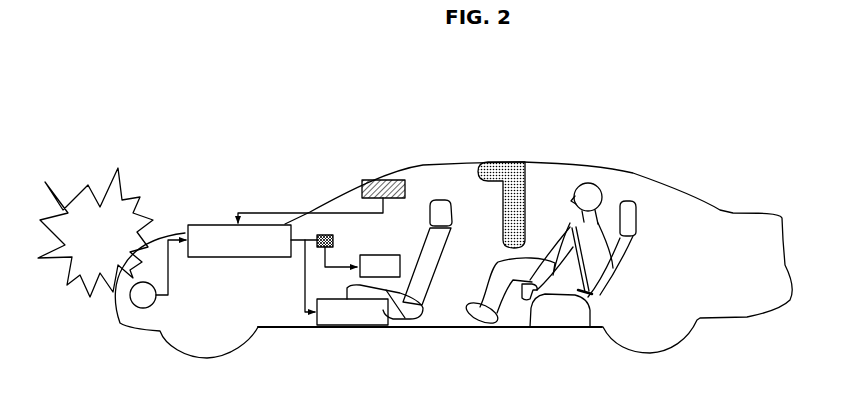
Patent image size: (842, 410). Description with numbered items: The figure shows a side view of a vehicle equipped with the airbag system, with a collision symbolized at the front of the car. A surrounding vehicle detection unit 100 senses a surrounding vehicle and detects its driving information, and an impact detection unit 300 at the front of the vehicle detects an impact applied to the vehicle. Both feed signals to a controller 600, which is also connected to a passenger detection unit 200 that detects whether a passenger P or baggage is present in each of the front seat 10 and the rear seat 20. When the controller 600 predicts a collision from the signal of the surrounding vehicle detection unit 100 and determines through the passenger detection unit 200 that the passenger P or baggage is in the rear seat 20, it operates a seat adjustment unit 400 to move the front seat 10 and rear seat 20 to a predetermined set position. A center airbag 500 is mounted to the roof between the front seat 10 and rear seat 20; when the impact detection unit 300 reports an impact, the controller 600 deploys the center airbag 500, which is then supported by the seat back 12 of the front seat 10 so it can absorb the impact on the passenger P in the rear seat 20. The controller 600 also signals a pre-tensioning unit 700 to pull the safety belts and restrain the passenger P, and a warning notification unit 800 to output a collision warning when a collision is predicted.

The surrounding vehicle detection unit 100 is at (381, 178).
The seat back 12 is at (448, 200).
The front seat 10 is at (429, 226).
The center airbag 500 is at (511, 172).
The passenger P is at (584, 183).
The rear seat 20 is at (641, 211).
The controller 600 is at (258, 236).
The warning notification unit 800 is at (327, 235).
The impact detection unit 300 is at (138, 306).
The seat adjustment unit 400 is at (358, 308).
The passenger detection unit 200 is at (535, 297).
The pre-tensioning unit 700 is at (590, 300).